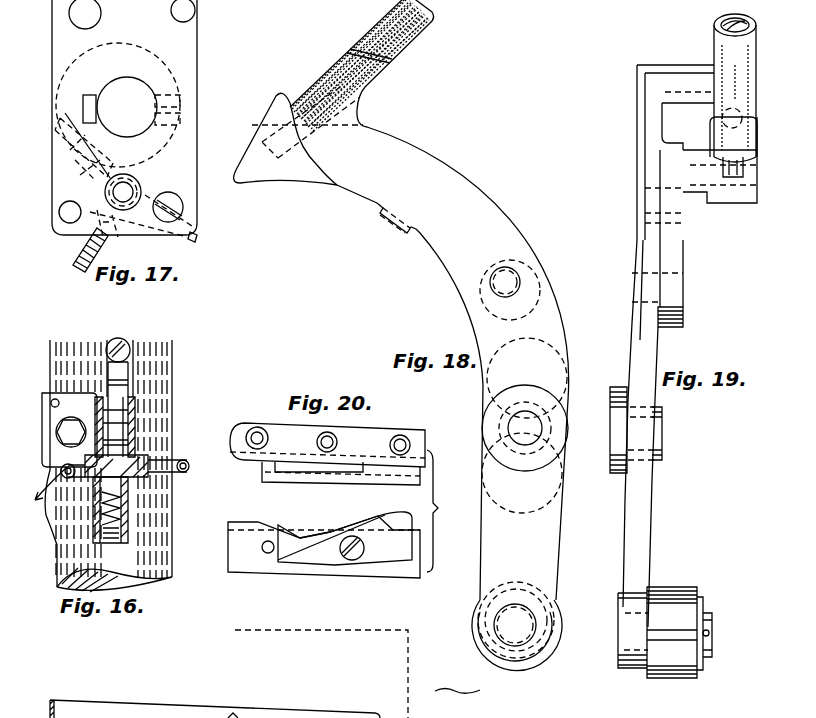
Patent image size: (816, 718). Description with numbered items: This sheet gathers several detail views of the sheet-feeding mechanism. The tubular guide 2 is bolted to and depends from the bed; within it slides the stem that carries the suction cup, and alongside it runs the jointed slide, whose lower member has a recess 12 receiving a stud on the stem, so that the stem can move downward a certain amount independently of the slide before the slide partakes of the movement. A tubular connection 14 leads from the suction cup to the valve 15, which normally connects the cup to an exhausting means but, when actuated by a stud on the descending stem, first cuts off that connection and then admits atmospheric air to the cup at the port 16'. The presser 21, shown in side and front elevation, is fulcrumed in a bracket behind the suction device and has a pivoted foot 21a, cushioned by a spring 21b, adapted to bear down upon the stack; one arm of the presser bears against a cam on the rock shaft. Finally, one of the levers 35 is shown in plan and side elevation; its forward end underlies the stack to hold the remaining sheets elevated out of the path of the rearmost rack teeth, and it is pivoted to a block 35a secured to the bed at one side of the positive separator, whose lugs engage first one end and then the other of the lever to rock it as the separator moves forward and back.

In FIG. 17, the tubular guide 2 is at (192, 167).
In FIG. 16, the tubular guide 2 is at (158, 538).
In FIG. 16, the recess 12 is at (122, 343).
In FIG. 17, the tubular connection 14 is at (198, 235).
In FIG. 16, the tubular connection 14 is at (210, 447).
In FIG. 17, the valve 15 is at (128, 191).
In FIG. 16, the valve 15 is at (135, 452).
In FIG. 16, the port 16' is at (149, 420).
In FIG. 18, the presser 21 is at (555, 525).
In FIG. 19, the presser 21 is at (645, 530).
In FIG. 18, the pivoted foot 21a is at (287, 167).
In FIG. 19, the pivoted foot 21a is at (747, 190).
In FIG. 18, the spring 21b is at (355, 85).
In FIG. 20, the lever 35 is at (392, 478).
In FIG. 20, the block 35a is at (417, 438).